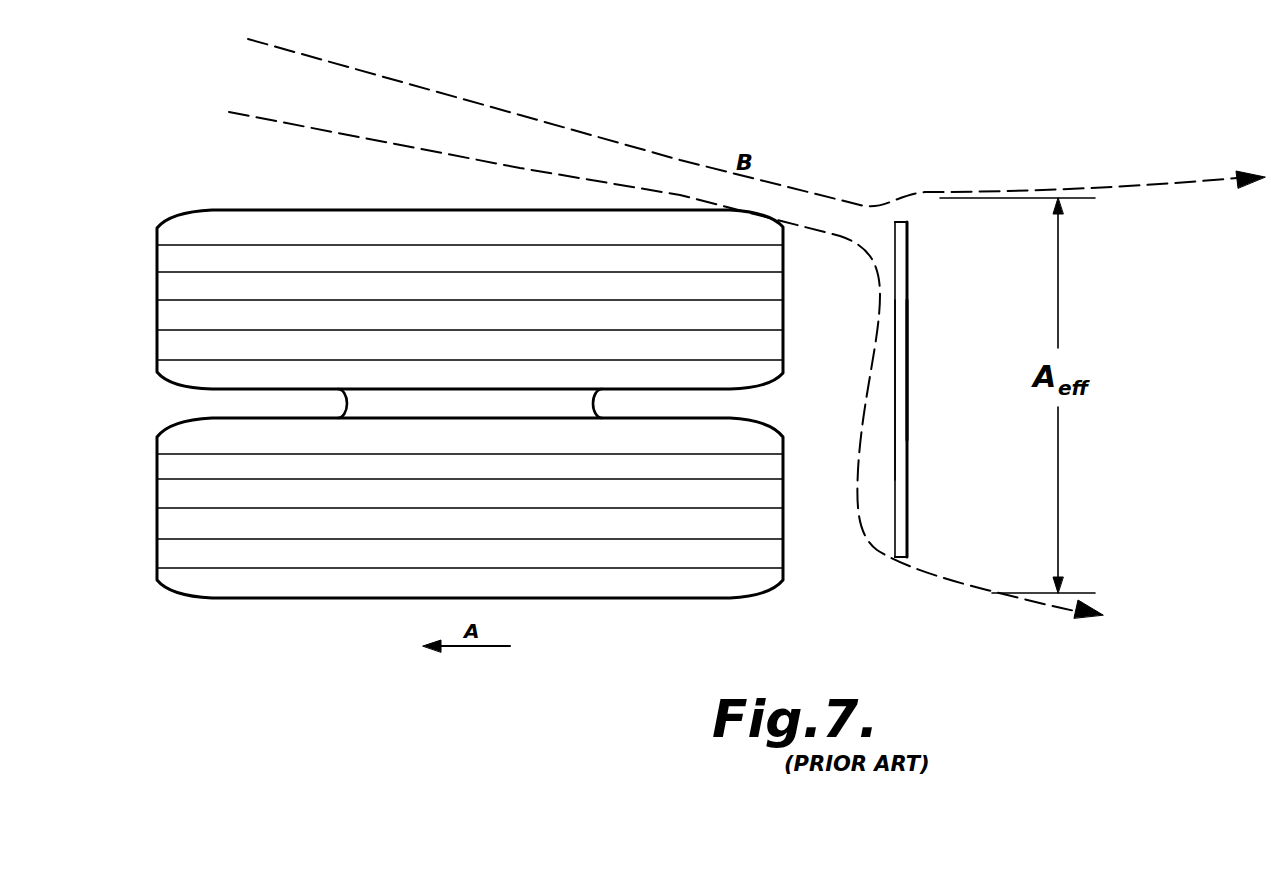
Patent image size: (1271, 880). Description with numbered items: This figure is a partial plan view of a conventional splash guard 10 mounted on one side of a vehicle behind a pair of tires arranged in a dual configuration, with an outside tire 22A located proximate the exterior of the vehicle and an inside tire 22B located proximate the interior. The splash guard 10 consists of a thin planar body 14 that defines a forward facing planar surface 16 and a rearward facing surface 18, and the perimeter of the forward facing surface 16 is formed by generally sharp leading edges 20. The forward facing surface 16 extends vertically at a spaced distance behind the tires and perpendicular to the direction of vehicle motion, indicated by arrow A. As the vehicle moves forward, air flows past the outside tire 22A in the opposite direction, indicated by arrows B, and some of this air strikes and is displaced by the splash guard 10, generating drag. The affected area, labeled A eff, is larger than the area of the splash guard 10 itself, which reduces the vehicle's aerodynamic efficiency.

The splash guard 10 is at (917, 387).
The thin planar body 14 is at (903, 532).
The forward facing planar surface 16 is at (893, 432).
The rearward facing surface 18 is at (907, 362).
The leading edges 20 is at (895, 222).
The outside tire 22A is at (162, 289).
The inside tire 22B is at (162, 524).